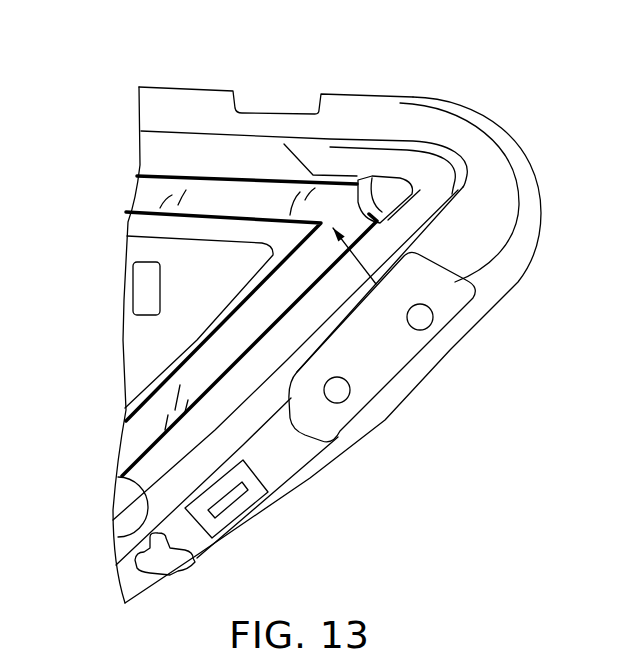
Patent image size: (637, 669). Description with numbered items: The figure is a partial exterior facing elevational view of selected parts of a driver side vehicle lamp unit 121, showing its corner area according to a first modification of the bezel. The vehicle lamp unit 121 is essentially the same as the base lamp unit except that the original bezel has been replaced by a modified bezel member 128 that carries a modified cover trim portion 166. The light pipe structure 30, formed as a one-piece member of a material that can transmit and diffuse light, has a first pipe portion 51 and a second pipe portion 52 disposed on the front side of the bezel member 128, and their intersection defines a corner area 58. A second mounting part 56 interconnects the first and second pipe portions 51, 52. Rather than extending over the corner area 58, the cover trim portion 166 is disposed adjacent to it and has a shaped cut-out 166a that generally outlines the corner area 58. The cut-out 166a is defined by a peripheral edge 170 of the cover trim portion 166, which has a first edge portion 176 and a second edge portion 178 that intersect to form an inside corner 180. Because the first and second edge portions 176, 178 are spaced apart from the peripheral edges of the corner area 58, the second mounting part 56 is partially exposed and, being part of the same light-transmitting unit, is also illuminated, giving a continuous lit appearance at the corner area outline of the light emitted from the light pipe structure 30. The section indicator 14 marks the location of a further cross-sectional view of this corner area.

The vehicle lamp unit 121 is at (114, 48).
The bezel member 128 is at (178, 88).
The first pipe portion 51 is at (162, 177).
The first edge portion 176 is at (326, 172).
The peripheral edge 170 is at (375, 172).
The shaped cut-out 166a is at (404, 177).
The inside corner 180 is at (470, 162).
The cover trim portion 166 is at (447, 182).
The second edge portion 178 is at (452, 258).
The second mounting part 56 is at (405, 258).
The corner area 58 is at (350, 262).
The second pipe portion 52 is at (237, 358).
The light pipe structure 30 is at (118, 538).
The section line 14 is at (277, 158).